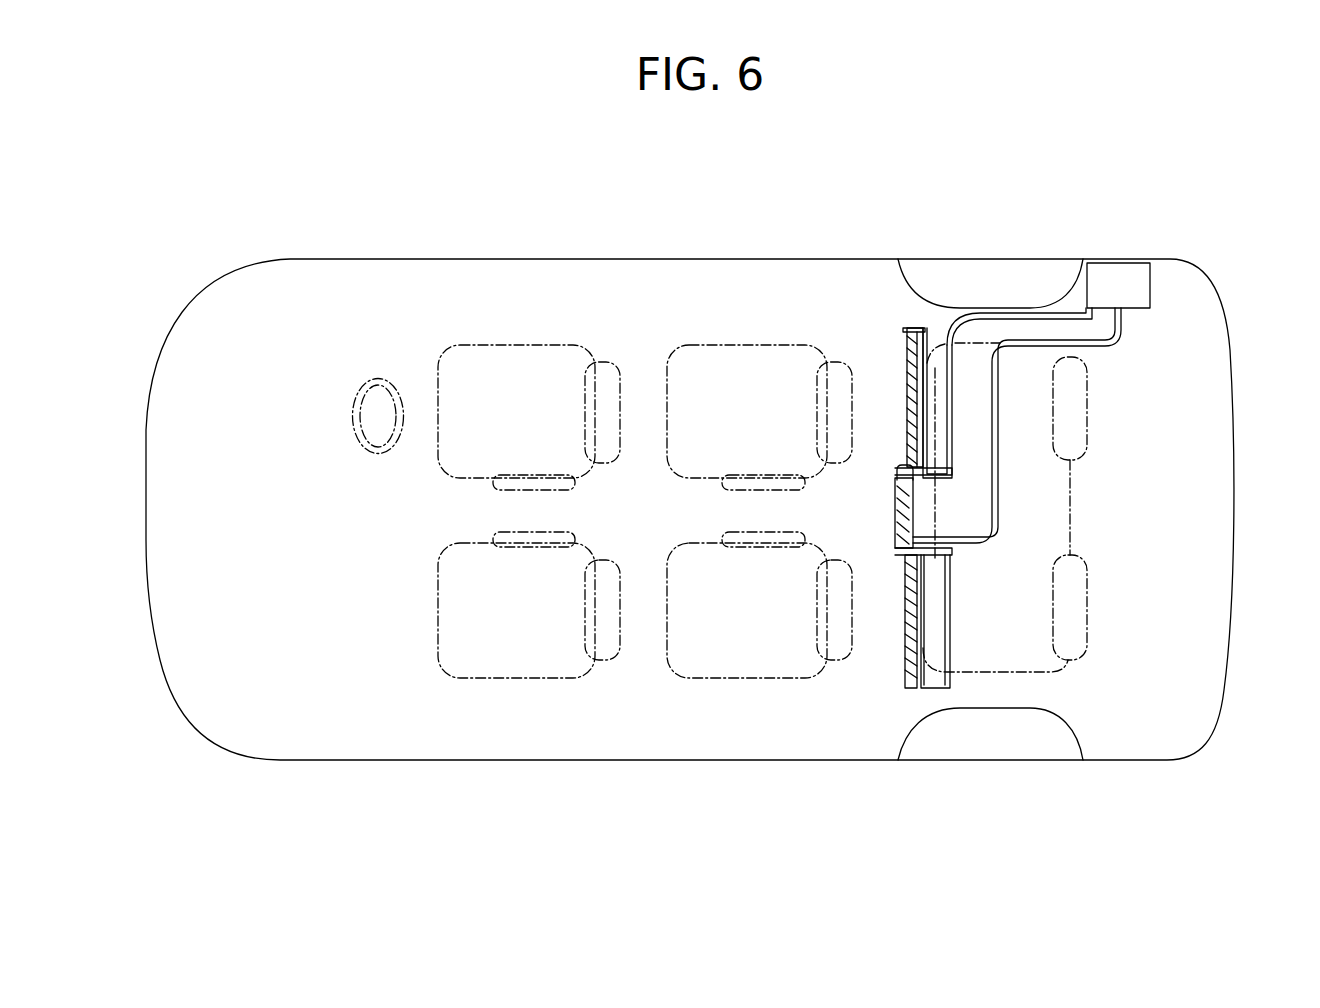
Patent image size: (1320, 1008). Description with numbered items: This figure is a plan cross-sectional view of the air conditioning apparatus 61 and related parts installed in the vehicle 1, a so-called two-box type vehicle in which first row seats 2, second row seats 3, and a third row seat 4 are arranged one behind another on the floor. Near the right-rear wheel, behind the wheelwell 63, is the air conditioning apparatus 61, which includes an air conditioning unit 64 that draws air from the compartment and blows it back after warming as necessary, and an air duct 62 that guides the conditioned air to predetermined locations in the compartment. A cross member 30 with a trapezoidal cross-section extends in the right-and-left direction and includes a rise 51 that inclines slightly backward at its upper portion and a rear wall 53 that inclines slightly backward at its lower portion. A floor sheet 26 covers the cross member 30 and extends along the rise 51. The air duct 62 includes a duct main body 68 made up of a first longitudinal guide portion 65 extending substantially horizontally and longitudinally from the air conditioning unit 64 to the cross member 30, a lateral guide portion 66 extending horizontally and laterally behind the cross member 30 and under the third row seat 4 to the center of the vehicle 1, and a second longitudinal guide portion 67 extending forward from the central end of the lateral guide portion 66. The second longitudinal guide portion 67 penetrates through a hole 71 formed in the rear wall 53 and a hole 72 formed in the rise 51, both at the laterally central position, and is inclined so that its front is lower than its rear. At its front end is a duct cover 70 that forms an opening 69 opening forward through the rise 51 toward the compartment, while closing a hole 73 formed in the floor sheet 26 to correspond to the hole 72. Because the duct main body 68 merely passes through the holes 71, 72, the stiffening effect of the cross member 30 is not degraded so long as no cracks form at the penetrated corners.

The vehicle 1 is at (307, 251).
The first row seats 2 is at (509, 346).
The second row seats 3 is at (735, 346).
The third row seat 4 is at (1089, 447).
The floor sheet 26 is at (906, 368).
The cross member 30 is at (935, 330).
The rise 51 is at (905, 668).
The rear wall 53 is at (947, 685).
The air conditioning apparatus 61 is at (1102, 386).
The air duct 62 is at (1018, 330).
The wheelwell 63 is at (1025, 272).
The air conditioning unit 64 is at (1108, 288).
The first longitudinal guide portion 65 is at (1023, 386).
The lateral guide portion 66 is at (1023, 436).
The second longitudinal guide portion 67 is at (1021, 632).
The duct main body 68 is at (1023, 436).
The opening 69 is at (839, 481).
The duct cover 70 is at (897, 470).
The hole 71 is at (975, 541).
The hole 72 is at (895, 528).
The hole 73 is at (839, 481).